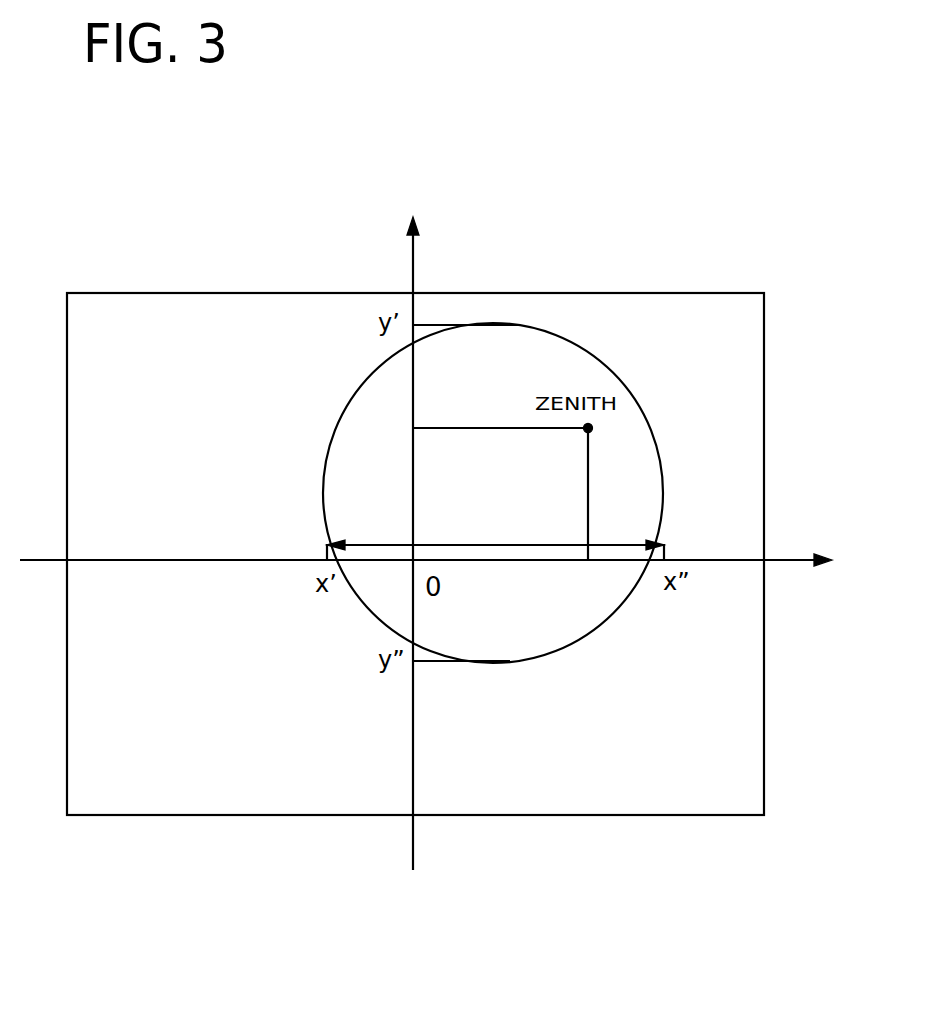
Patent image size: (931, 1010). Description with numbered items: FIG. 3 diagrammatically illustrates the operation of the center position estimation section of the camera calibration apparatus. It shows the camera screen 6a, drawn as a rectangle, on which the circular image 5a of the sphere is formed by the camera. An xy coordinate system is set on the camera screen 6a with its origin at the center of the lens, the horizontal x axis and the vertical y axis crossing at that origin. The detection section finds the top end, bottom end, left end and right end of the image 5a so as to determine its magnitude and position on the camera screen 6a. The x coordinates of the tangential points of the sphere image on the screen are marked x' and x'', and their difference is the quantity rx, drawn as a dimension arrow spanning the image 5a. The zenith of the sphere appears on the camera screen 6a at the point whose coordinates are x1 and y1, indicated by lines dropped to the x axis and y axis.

The camera screen 6a is at (262, 293).
The image of the sphere 5a is at (522, 325).
The x axis x is at (437, 561).
The y axis y is at (411, 529).
The x coordinate of the zenith x1 is at (591, 515).
The y coordinate of the zenith y1 is at (481, 428).
The horizontal extent of the sphere image rx is at (495, 538).